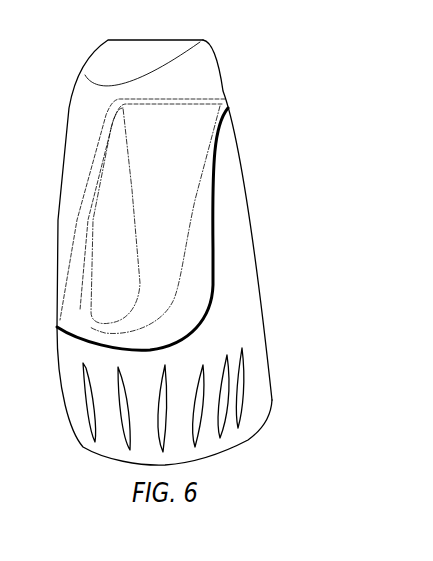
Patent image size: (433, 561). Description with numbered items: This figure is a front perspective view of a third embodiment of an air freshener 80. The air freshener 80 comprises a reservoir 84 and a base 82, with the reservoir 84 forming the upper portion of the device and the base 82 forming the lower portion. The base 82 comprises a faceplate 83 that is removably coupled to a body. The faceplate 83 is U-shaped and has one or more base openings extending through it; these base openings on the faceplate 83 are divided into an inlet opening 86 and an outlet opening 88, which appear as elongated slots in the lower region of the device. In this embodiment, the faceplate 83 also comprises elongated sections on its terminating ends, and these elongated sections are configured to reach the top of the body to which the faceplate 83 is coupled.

The air freshener 80 is at (292, 144).
The base 82 is at (284, 274).
The faceplate 83 is at (255, 319).
The reservoir 84 is at (208, 75).
The inlet opening 86 is at (85, 383).
The outlet opening 88 is at (88, 423).